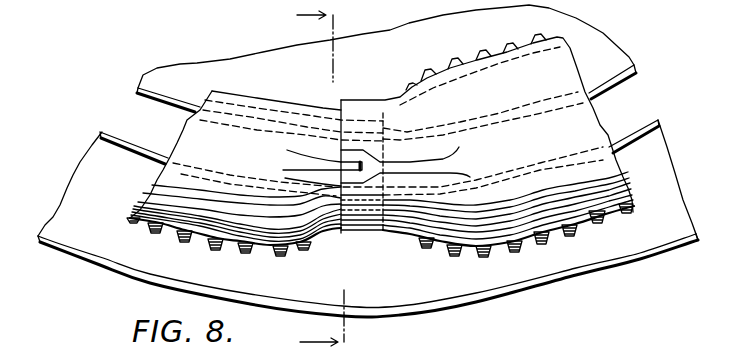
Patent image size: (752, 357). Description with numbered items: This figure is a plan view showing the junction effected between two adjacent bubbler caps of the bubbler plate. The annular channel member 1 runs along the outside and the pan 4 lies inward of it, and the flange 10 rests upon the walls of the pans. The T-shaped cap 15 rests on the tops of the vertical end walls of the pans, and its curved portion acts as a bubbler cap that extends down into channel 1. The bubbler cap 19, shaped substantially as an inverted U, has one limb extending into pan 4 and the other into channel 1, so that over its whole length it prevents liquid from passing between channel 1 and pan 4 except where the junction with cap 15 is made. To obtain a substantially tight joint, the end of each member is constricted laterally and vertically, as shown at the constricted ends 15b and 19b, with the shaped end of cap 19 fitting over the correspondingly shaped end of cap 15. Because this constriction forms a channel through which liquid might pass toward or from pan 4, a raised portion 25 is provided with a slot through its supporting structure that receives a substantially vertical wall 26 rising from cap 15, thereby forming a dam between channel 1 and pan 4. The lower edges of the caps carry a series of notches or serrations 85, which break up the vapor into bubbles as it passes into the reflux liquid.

The annular channel member 1 is at (589, 254).
The pan 4 is at (203, 67).
The flange 10 is at (307, 178).
The T-shaped cap 15 is at (197, 133).
The constricted end of cap 15 15b is at (317, 232).
The bubbler cap 19 is at (586, 113).
The constricted end of cap 19 19b is at (395, 212).
The raised portion 25 is at (416, 163).
The vertical wall 26 is at (322, 160).
The notches or serrations 85 is at (185, 242).